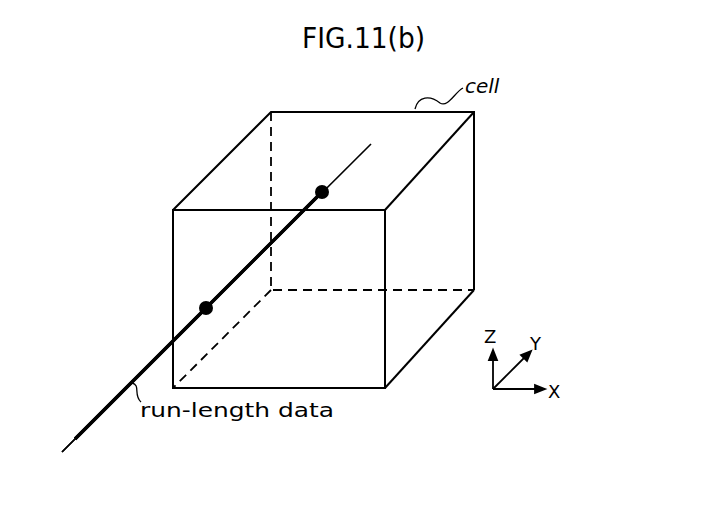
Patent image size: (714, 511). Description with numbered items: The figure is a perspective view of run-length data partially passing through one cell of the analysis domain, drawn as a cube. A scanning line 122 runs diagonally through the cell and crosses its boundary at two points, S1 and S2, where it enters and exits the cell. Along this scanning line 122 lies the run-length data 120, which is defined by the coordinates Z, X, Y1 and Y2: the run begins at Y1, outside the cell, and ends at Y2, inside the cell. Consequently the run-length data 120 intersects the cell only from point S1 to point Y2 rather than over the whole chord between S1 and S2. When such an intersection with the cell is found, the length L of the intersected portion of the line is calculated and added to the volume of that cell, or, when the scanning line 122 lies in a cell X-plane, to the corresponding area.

The run-length data 120 is at (150, 357).
The scanning line 122 is at (72, 437).
The intersection point S1 is at (209, 325).
The intersection point S2 is at (309, 180).
The run-length start coordinate Y1 is at (140, 373).
The run-length end coordinate Y2 is at (264, 250).